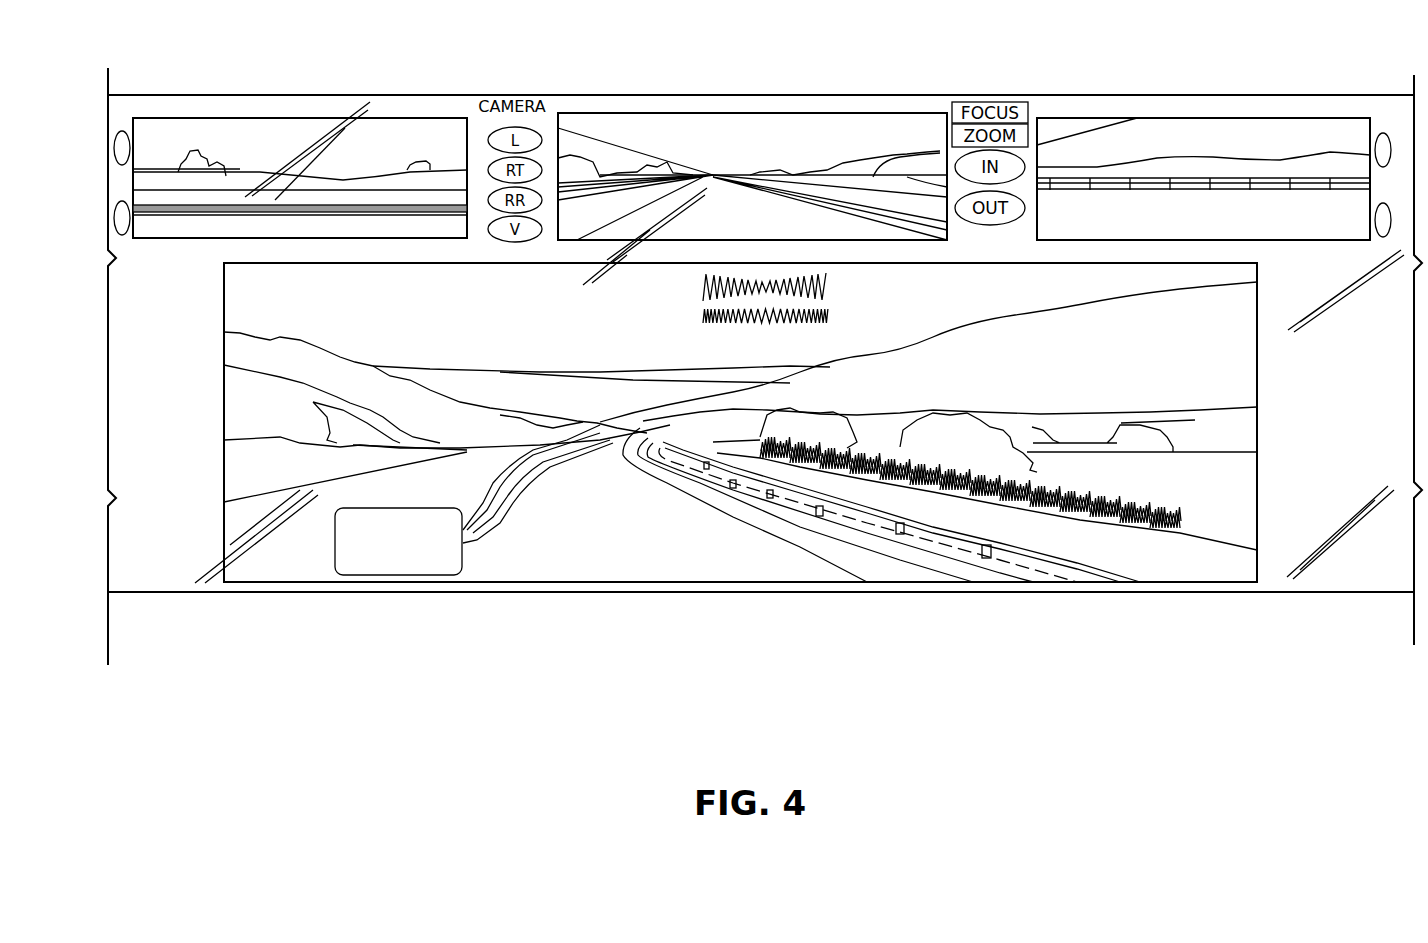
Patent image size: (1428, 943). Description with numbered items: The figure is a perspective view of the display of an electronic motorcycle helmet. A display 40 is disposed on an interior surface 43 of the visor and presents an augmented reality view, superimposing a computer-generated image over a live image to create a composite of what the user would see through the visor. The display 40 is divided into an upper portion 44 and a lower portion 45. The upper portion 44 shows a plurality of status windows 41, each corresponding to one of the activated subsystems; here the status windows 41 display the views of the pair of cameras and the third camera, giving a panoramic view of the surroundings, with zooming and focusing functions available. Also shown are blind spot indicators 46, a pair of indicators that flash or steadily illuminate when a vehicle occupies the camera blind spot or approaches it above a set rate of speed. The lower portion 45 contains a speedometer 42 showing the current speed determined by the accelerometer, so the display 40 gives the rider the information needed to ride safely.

The display 40 is at (134, 311).
The status windows 41 is at (810, 130).
The speedometer 42 is at (403, 560).
The interior surface 43 is at (148, 424).
The upper portion 44 is at (1398, 170).
The lower portion 45 is at (1302, 447).
The blind spot indicators 46 is at (122, 130).